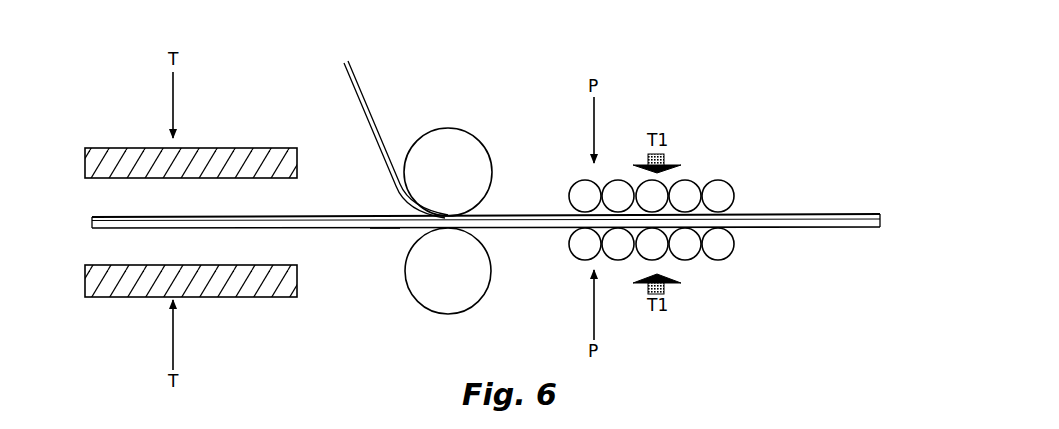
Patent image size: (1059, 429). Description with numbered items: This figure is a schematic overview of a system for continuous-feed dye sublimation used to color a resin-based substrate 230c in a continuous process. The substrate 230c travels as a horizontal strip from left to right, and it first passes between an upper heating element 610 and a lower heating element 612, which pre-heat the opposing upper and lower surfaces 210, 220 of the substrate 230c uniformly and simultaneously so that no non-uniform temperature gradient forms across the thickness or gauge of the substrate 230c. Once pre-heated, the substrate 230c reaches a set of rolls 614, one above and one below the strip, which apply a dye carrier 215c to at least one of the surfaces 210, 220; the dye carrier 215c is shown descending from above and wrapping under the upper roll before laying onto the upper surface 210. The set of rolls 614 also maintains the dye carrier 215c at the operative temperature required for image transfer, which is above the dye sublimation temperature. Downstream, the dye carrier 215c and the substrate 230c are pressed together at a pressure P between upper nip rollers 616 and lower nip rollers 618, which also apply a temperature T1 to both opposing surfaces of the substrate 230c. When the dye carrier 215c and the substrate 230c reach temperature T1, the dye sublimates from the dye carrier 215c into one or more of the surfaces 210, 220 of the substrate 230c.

The upper surface 210 is at (127, 215).
The lower surface 220 is at (140, 230).
The dye carrier 215c is at (345, 50).
The resin-based substrate 230c is at (382, 228).
The heating element 610 is at (150, 162).
The heating element 612 is at (212, 287).
The set of rolls 614 is at (445, 127).
The nip roller 616 is at (712, 177).
The nip roller 618 is at (713, 264).